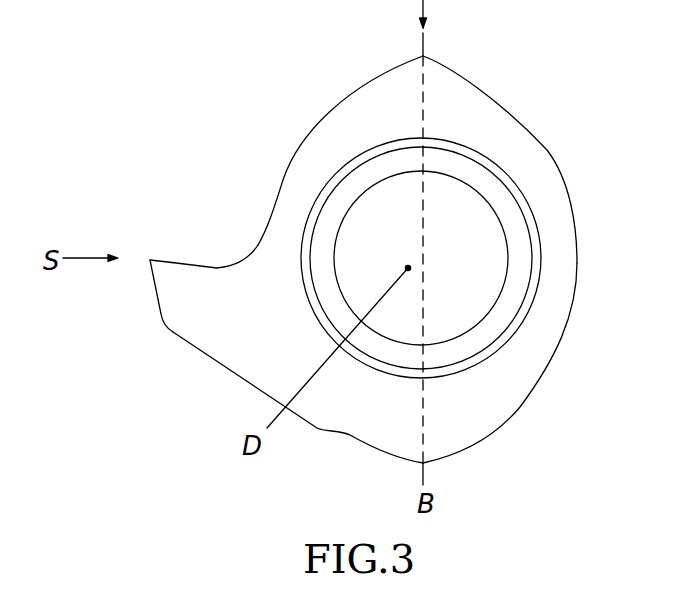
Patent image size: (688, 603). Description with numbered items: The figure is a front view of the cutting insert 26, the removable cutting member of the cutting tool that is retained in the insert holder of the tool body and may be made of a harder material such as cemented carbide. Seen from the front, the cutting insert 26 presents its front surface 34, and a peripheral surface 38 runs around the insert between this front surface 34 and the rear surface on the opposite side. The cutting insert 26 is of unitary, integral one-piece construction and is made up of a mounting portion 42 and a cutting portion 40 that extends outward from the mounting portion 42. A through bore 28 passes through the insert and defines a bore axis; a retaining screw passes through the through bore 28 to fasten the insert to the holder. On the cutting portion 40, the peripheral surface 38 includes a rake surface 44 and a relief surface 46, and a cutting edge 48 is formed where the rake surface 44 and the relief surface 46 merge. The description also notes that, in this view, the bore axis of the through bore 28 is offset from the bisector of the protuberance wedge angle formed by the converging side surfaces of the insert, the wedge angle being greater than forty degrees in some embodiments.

The cutting insert 26 is at (188, 93).
The through bore 28 is at (483, 198).
The front surface 34 is at (353, 107).
The mounting portion 42 is at (470, 103).
The peripheral surface 38 is at (520, 407).
The cutting portion 40 is at (212, 303).
The relief surface 46 is at (155, 286).
The cutting edge 48 is at (150, 260).
The rake surface 44 is at (190, 262).